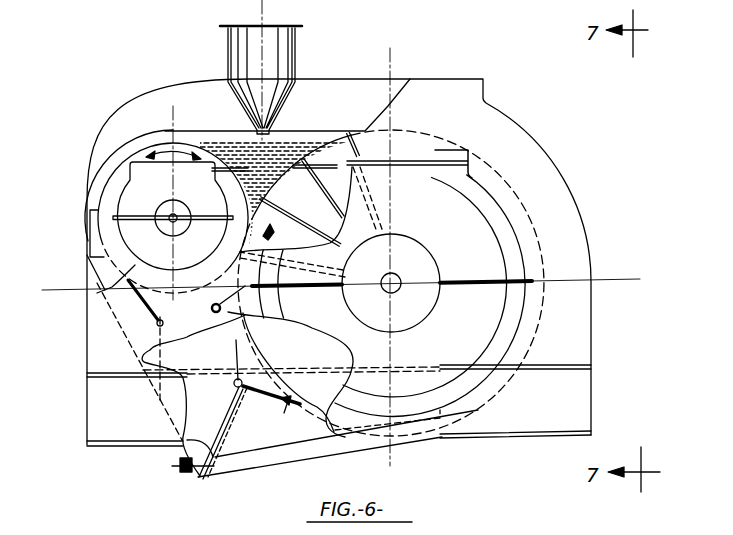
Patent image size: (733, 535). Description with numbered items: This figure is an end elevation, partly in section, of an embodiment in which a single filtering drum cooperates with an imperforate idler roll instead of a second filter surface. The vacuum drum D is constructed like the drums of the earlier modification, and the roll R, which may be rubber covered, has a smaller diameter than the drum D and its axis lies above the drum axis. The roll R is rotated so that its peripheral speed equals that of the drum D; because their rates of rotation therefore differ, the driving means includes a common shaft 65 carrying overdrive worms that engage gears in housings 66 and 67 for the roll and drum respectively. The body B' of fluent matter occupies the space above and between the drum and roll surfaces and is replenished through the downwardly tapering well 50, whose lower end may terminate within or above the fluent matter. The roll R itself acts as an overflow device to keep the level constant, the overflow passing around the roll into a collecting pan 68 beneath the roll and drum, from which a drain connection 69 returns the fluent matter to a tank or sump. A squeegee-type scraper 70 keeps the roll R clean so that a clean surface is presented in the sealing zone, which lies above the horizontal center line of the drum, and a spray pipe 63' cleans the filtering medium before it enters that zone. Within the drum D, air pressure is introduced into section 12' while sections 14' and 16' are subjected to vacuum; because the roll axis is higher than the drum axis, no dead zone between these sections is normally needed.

The downwardly tapering well 50 is at (288, 43).
The body of fluent matter B' is at (278, 147).
The housing 66 is at (143, 178).
The roll R is at (112, 203).
The scraper 70 is at (145, 302).
The spray pipe 63' is at (211, 304).
The common shaft 65 is at (349, 157).
The section 16' is at (347, 166).
The section 14' is at (323, 191).
The section 12' is at (300, 223).
The housing 67 is at (476, 192).
The vacuum drum D is at (523, 200).
The drain connection 69 is at (187, 473).
The collecting pan 68 is at (272, 456).